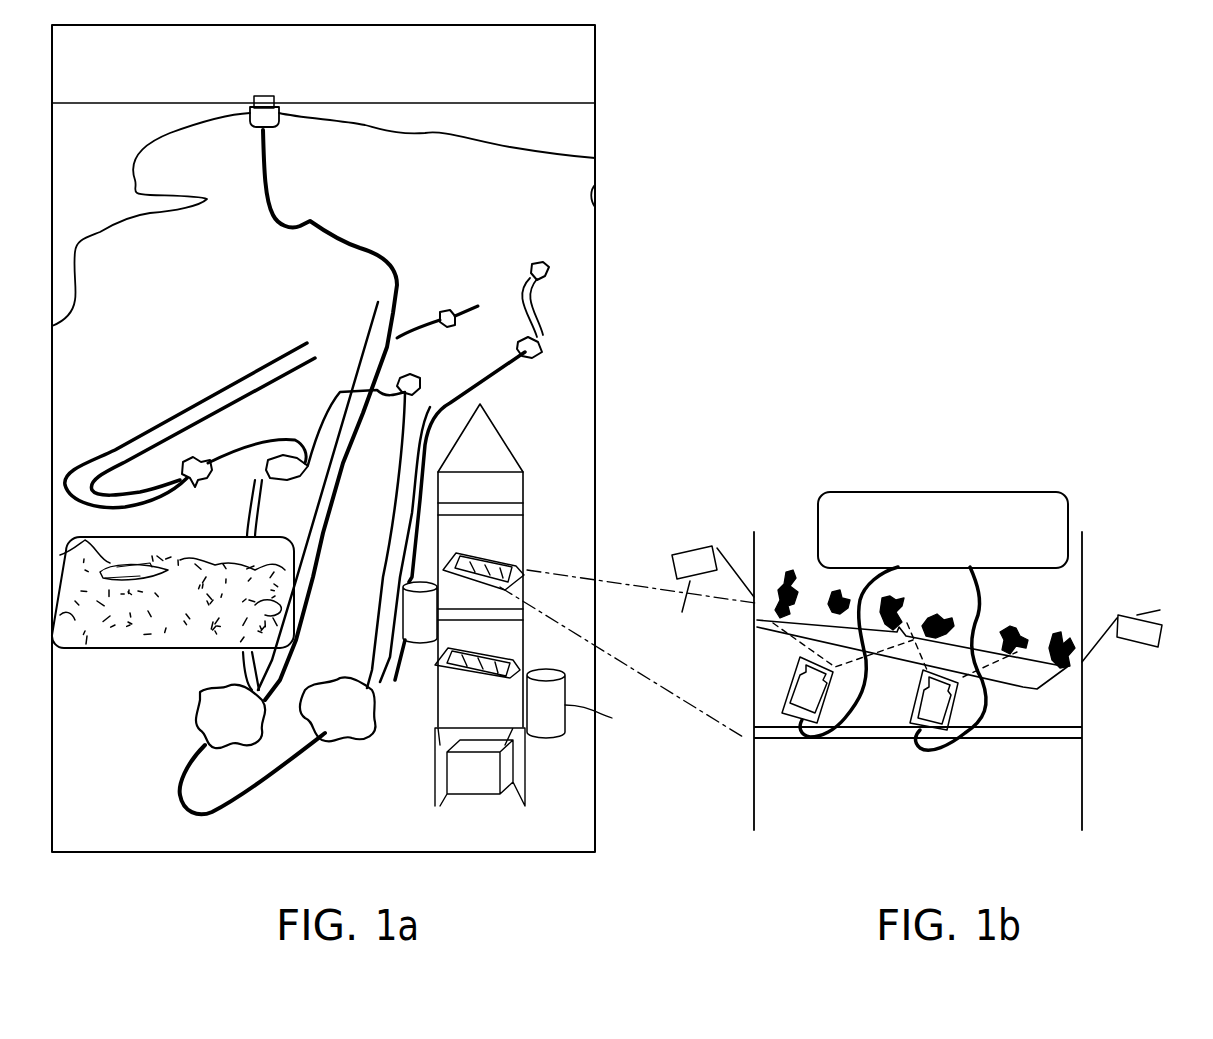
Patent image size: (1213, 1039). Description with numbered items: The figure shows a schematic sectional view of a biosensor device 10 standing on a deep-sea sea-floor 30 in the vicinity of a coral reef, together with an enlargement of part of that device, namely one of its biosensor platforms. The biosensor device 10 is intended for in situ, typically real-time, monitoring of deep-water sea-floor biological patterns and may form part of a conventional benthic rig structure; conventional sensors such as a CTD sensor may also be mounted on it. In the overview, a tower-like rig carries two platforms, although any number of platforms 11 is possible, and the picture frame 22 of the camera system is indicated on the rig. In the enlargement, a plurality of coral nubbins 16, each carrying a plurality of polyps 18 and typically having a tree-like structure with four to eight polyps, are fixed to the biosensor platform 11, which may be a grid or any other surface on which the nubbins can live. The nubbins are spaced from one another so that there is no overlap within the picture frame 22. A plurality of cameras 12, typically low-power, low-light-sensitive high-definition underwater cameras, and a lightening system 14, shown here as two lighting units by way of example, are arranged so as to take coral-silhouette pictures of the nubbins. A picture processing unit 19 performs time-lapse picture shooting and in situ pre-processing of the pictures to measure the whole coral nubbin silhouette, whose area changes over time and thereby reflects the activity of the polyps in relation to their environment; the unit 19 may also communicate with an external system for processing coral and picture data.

In FIG. 1A, the biosensor device 10 is at (403, 438).
In FIG. 1B, the biosensor device 10 is at (924, 631).
In FIG. 1B, the biosensor platform 11 is at (1050, 683).
In FIG. 1B, the cameras 12 is at (780, 693).
In FIG. 1B, the lightening system 14 is at (924, 604).
In FIG. 1B, the coral nubbins 16 is at (1007, 619).
In FIG. 1B, the polyps 18 is at (1027, 633).
In FIG. 1B, the picture processing unit 19 is at (921, 492).
In FIG. 1A, the picture frame 22 is at (520, 566).
In FIG. 1A, the deep-sea sea-floor 30 is at (340, 840).